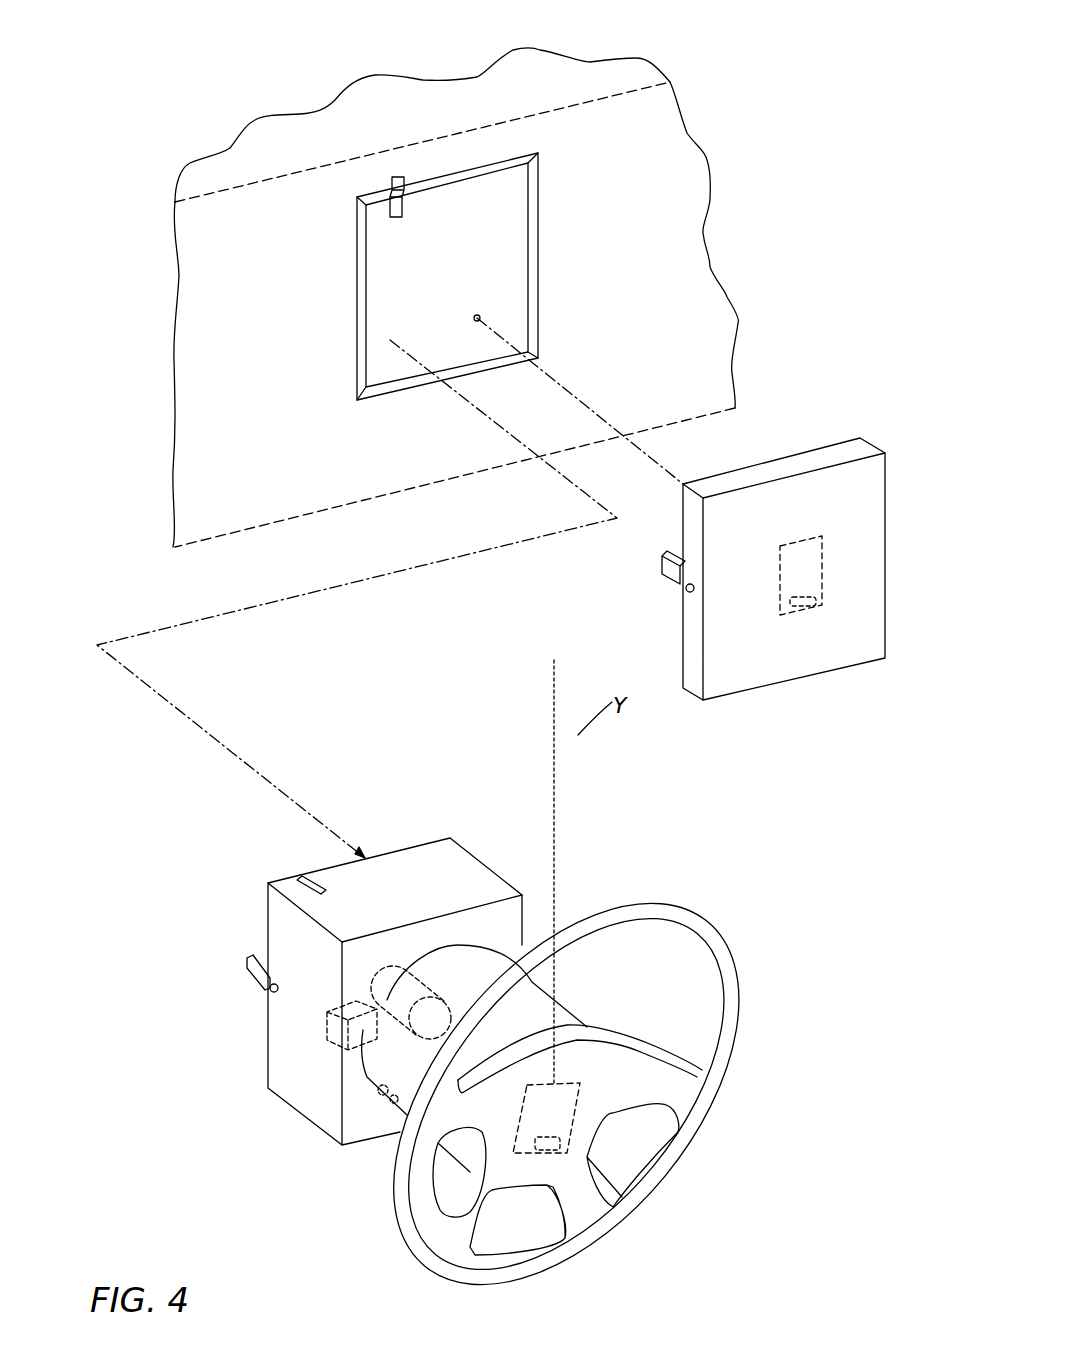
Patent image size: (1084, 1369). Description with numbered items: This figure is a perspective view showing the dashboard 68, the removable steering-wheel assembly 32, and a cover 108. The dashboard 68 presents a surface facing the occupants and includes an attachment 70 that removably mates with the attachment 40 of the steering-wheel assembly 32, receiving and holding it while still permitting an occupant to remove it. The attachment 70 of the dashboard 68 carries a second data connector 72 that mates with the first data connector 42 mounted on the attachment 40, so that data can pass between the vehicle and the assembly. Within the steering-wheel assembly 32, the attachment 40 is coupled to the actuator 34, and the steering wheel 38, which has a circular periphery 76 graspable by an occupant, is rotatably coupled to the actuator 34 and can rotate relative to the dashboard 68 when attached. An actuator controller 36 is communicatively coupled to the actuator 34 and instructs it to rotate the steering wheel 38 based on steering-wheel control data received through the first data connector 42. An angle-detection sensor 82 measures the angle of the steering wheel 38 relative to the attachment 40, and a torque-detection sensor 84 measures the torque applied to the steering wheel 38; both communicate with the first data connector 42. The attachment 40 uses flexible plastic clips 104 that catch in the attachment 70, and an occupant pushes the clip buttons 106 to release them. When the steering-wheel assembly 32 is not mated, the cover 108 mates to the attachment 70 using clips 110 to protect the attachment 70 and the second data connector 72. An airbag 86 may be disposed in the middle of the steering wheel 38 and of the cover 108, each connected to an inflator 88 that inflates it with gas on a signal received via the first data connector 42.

The steering-wheel assembly 32 is at (566, 1078).
The actuator 34 is at (398, 1000).
The actuator controller 36 is at (337, 1038).
The steering wheel 38 is at (670, 902).
The attachment 40 is at (265, 1055).
The first data connector 42 is at (327, 883).
The dashboard 68 is at (573, 150).
The attachment 70 is at (356, 253).
The second data connector 72 is at (407, 207).
The circular periphery 76 is at (405, 1230).
The angle-detection sensor 82 is at (383, 1095).
The torque-detection sensor 84 is at (395, 1105).
The airbag 86 is at (823, 552).
The inflator 88 is at (823, 590).
The clips 104 is at (245, 962).
The clip buttons 106 is at (265, 995).
The cover 108 is at (772, 683).
The clips 110 is at (660, 572).